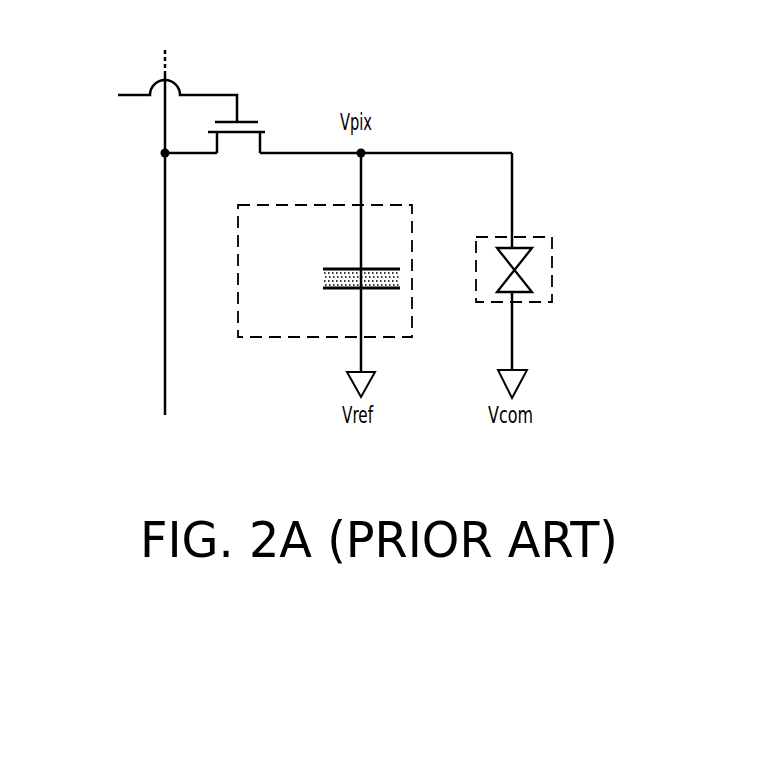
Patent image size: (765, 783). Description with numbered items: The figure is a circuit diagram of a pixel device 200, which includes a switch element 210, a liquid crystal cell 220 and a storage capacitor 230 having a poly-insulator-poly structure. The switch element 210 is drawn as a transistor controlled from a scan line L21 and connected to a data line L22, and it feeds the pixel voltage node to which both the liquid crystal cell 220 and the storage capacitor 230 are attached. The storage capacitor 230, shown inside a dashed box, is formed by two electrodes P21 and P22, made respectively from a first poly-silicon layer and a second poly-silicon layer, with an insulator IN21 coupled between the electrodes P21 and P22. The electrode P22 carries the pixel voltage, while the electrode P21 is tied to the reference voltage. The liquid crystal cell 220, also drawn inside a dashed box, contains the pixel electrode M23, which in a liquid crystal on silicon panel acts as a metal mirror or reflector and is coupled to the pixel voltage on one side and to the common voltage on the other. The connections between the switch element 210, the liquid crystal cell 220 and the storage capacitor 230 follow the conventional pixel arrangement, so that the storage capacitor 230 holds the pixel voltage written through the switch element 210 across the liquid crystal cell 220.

The pixel device 200 is at (640, 442).
The switch element 210 is at (240, 145).
The liquid crystal cell 220 is at (552, 278).
The storage capacitor 230 is at (313, 338).
The scan line L21 is at (139, 97).
The data line L22 is at (168, 63).
The electrode P21 is at (350, 290).
The electrode P22 is at (346, 267).
The insulator IN21 is at (323, 274).
The pixel electrode M23 is at (522, 247).